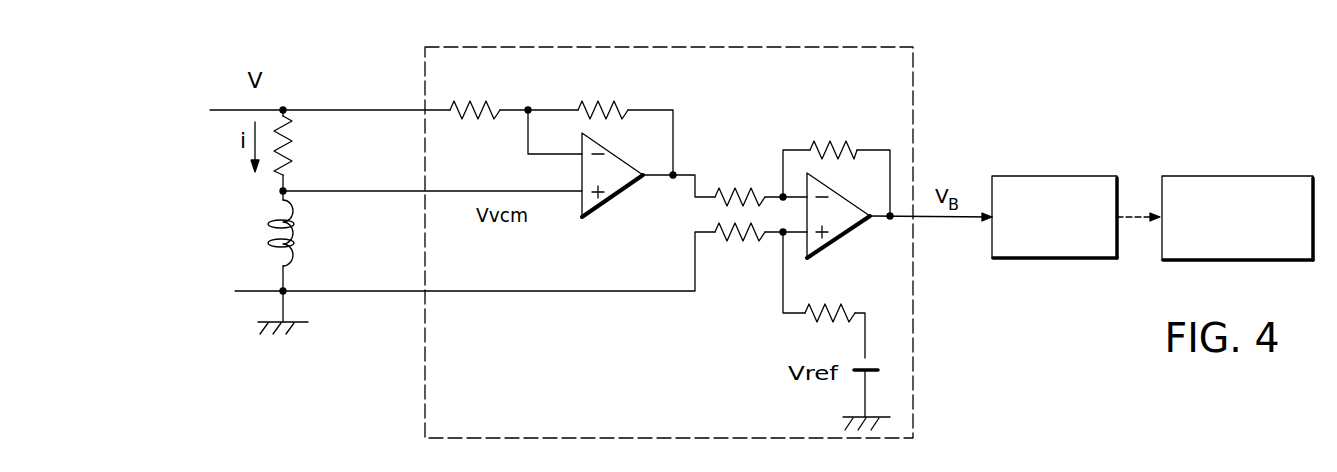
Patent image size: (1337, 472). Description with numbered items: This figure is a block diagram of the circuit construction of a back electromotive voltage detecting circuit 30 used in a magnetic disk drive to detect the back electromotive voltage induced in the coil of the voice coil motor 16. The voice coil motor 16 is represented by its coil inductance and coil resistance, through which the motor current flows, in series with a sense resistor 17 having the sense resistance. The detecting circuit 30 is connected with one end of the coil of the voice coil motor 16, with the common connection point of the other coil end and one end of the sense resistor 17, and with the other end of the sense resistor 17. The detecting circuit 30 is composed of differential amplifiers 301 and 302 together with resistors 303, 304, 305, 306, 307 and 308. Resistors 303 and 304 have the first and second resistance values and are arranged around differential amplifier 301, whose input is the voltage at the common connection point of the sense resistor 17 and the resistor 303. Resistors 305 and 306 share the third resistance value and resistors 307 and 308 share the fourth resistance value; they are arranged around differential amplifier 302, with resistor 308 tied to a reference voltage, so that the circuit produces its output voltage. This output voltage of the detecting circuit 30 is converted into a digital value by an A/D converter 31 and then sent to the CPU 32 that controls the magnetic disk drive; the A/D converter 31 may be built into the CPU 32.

The voice coil motor (VCM) 16 is at (255, 263).
The sense resistor 17 is at (302, 152).
The back electromotive voltage detecting circuit 30 is at (702, 242).
The A/D converter 31 is at (1082, 176).
The CPU 32 is at (1282, 176).
The differential amplifier 301 is at (605, 208).
The differential amplifier 302 is at (843, 240).
The resistor 303 is at (474, 127).
The resistor 304 is at (600, 126).
The resistor 305 is at (720, 175).
The resistor 306 is at (722, 255).
The resistor 307 is at (809, 135).
The resistor 308 is at (803, 325).